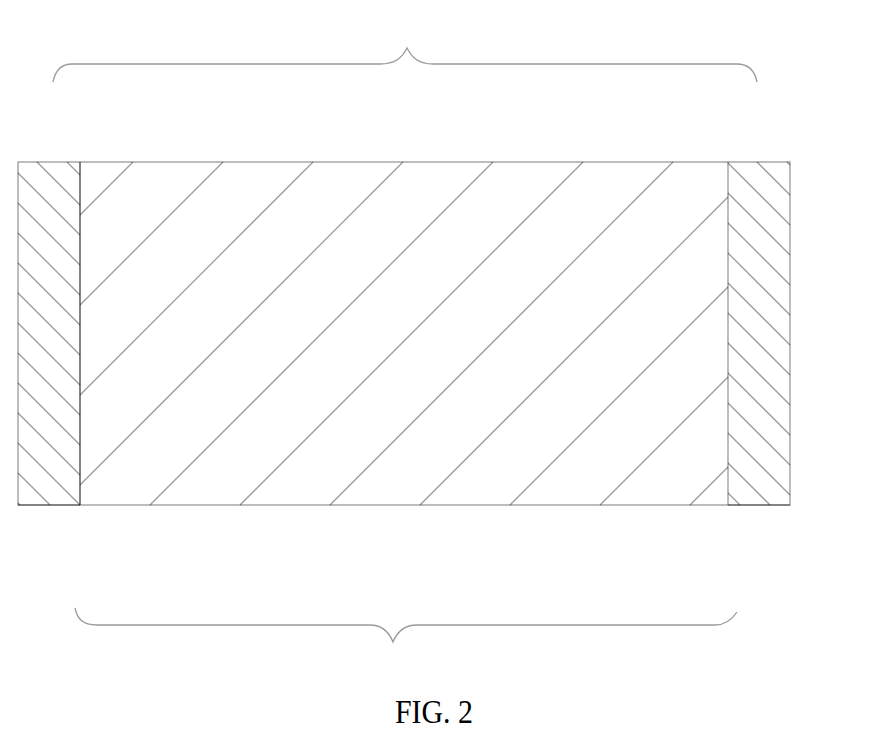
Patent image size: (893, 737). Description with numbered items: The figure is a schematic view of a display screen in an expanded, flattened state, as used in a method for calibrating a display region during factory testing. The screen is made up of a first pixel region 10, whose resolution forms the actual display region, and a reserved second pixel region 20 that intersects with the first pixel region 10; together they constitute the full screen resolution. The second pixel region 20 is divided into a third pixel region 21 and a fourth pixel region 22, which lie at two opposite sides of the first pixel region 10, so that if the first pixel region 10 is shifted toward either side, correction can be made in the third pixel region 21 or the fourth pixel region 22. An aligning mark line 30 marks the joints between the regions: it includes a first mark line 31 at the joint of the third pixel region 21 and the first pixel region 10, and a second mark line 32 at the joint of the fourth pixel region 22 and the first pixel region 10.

The first pixel region 10 is at (702, 313).
The second pixel region 20 is at (405, 44).
The third pixel region 21 is at (43, 183).
The fourth pixel region 22 is at (755, 182).
The aligning mark line 30 is at (406, 645).
The first mark line 31 is at (88, 505).
The second mark line 32 is at (717, 505).